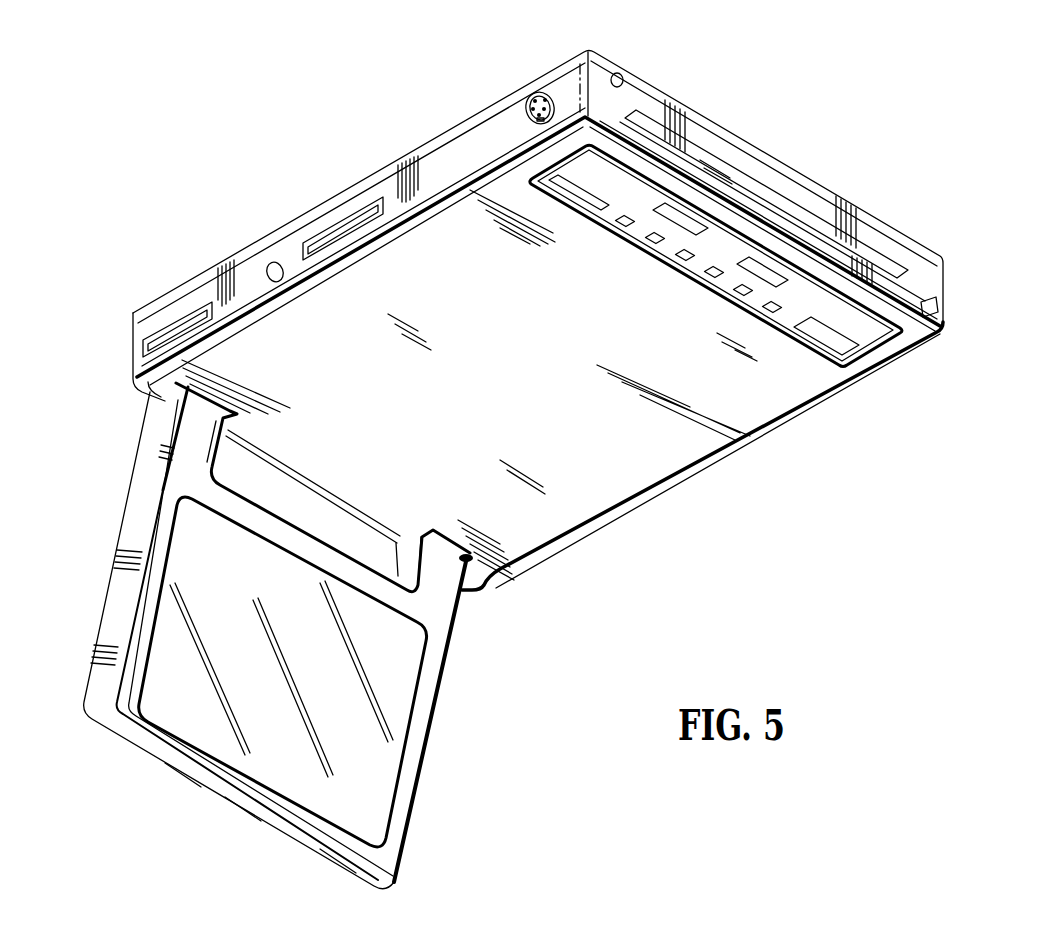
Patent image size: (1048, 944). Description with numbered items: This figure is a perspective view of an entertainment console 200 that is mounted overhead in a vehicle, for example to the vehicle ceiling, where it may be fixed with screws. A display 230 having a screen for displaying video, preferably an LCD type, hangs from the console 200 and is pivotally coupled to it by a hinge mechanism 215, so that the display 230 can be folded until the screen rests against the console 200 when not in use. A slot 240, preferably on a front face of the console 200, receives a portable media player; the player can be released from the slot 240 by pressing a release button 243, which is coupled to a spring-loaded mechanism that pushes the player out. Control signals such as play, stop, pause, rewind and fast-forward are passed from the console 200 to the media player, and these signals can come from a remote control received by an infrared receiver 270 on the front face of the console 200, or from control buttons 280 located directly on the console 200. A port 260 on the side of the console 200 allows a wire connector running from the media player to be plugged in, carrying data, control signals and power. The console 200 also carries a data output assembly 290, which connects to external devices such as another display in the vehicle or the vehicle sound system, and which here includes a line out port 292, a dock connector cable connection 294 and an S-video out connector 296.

The entertainment console 200 is at (813, 410).
The hinge mechanism 215 is at (447, 590).
The display 230 is at (392, 757).
The slot 240 is at (803, 213).
The release button 243 is at (619, 75).
The port 260 is at (176, 322).
The infrared receiver 270 is at (938, 302).
The control buttons 280 is at (575, 163).
The data output assembly 290 is at (291, 183).
The line out port 292 is at (267, 263).
The dock connector cable connection 294 is at (367, 212).
The S-video out connector 296 is at (540, 93).